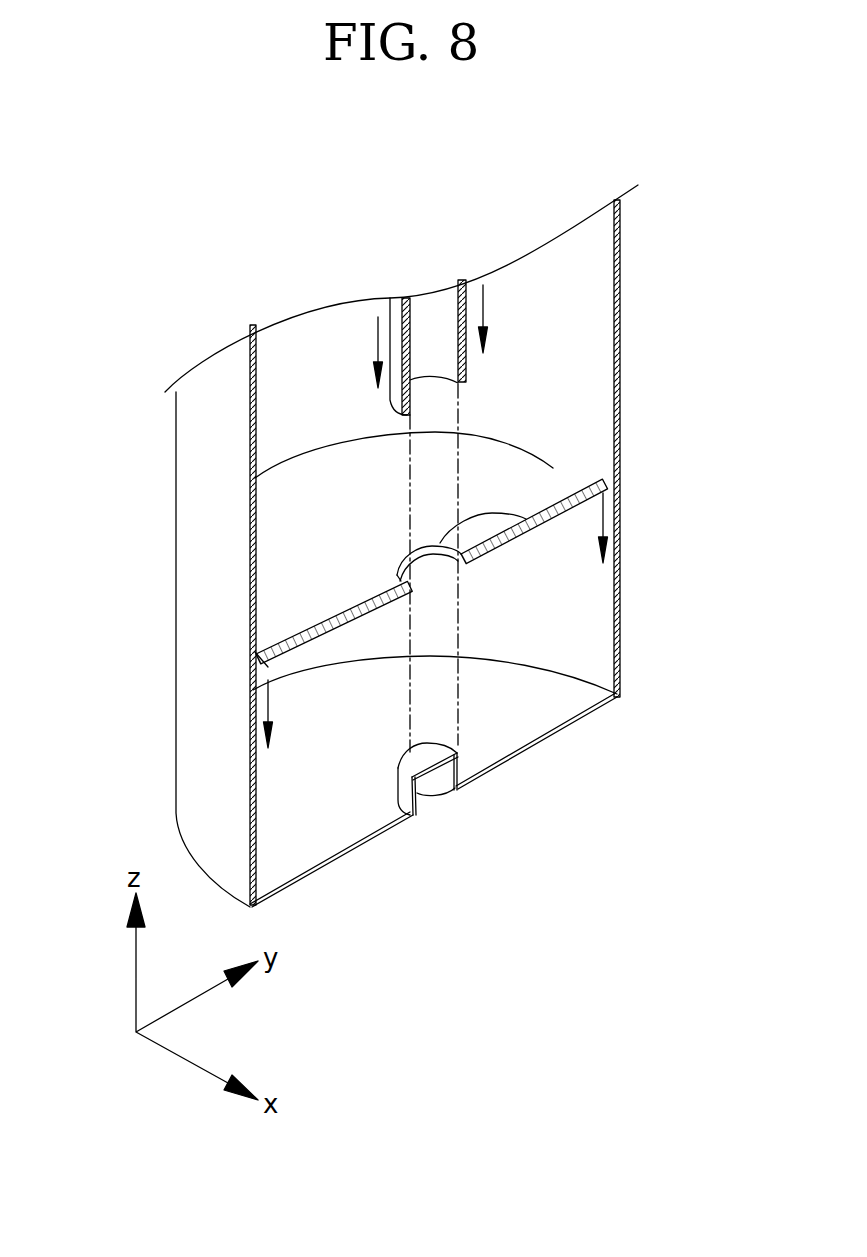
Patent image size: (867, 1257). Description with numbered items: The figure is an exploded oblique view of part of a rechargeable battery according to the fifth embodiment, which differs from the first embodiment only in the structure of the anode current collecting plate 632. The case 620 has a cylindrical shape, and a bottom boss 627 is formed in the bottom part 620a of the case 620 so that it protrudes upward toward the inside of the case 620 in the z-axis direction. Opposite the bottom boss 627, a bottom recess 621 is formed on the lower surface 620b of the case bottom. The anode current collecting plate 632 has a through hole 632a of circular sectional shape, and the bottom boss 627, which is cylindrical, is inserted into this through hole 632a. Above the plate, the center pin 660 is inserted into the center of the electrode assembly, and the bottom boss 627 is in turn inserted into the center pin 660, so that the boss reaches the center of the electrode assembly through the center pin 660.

The case 620 is at (198, 542).
The center pin 660 is at (467, 312).
The anode current collecting plate 632 is at (553, 468).
The through hole 632a is at (500, 517).
The bottom part 620a is at (617, 697).
The lower surface 620b is at (598, 717).
The bottom boss 627 is at (438, 750).
The bottom recess 621 is at (417, 802).